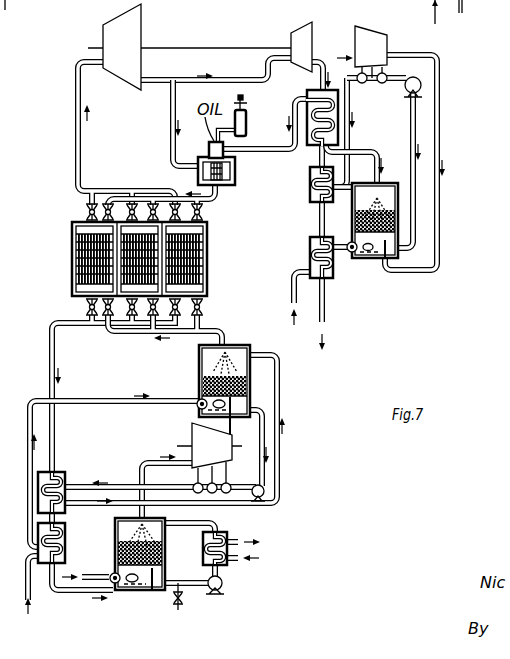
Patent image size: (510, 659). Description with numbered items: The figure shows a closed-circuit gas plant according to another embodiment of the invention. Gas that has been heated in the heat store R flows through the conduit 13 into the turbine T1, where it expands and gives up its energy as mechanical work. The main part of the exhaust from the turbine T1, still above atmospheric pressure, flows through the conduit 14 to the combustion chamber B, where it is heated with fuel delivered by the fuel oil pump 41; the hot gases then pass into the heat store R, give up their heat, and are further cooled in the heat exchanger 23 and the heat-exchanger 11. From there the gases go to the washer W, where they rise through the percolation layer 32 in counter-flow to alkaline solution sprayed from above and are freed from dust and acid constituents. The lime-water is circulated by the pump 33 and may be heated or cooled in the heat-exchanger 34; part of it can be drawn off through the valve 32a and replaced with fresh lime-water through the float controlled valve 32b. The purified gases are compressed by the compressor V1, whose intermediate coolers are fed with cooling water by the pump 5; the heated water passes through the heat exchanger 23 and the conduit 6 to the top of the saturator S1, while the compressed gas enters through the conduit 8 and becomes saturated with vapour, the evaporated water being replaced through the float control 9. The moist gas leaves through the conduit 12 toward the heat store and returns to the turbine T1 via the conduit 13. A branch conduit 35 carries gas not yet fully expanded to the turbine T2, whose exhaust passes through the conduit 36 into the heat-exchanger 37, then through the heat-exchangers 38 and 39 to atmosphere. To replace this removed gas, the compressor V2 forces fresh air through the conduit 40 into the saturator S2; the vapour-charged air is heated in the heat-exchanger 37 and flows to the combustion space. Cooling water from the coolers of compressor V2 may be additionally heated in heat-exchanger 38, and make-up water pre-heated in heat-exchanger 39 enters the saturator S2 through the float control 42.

The pump 5 is at (264, 480).
The conduit 6 is at (281, 398).
The conduit 8 is at (233, 418).
The float control 9 is at (195, 409).
The surface heat-exchanger 11 is at (70, 538).
The conduit 12 is at (214, 333).
The conduit 13 is at (82, 141).
The conduit 14 is at (157, 79).
The heat exchanger 23 is at (64, 473).
The percolation layer 32 is at (166, 554).
The valve 32a is at (181, 605).
The float controlled valve 32b is at (92, 592).
The pump 33 is at (223, 584).
The heat-exchanger 34 is at (226, 536).
The conduit 35 is at (223, 79).
The conduit 36 is at (319, 76).
The heat-exchanger 37 is at (309, 155).
The surface heat-exchanger 38 is at (309, 190).
The surface heat-exchanger 39 is at (309, 248).
The conduit 40 is at (439, 124).
The fuel oil pump 41 is at (247, 124).
The float control 42 is at (353, 256).
The turbine T1 is at (122, 47).
The turbine T2 is at (301, 47).
The air compressor V1 is at (209, 458).
The air-compressor V2 is at (371, 54).
The heat store R is at (208, 260).
The combustion chamber B is at (237, 172).
The saturator S1 is at (200, 371).
The saturator S2 is at (352, 219).
The washer W is at (114, 551).